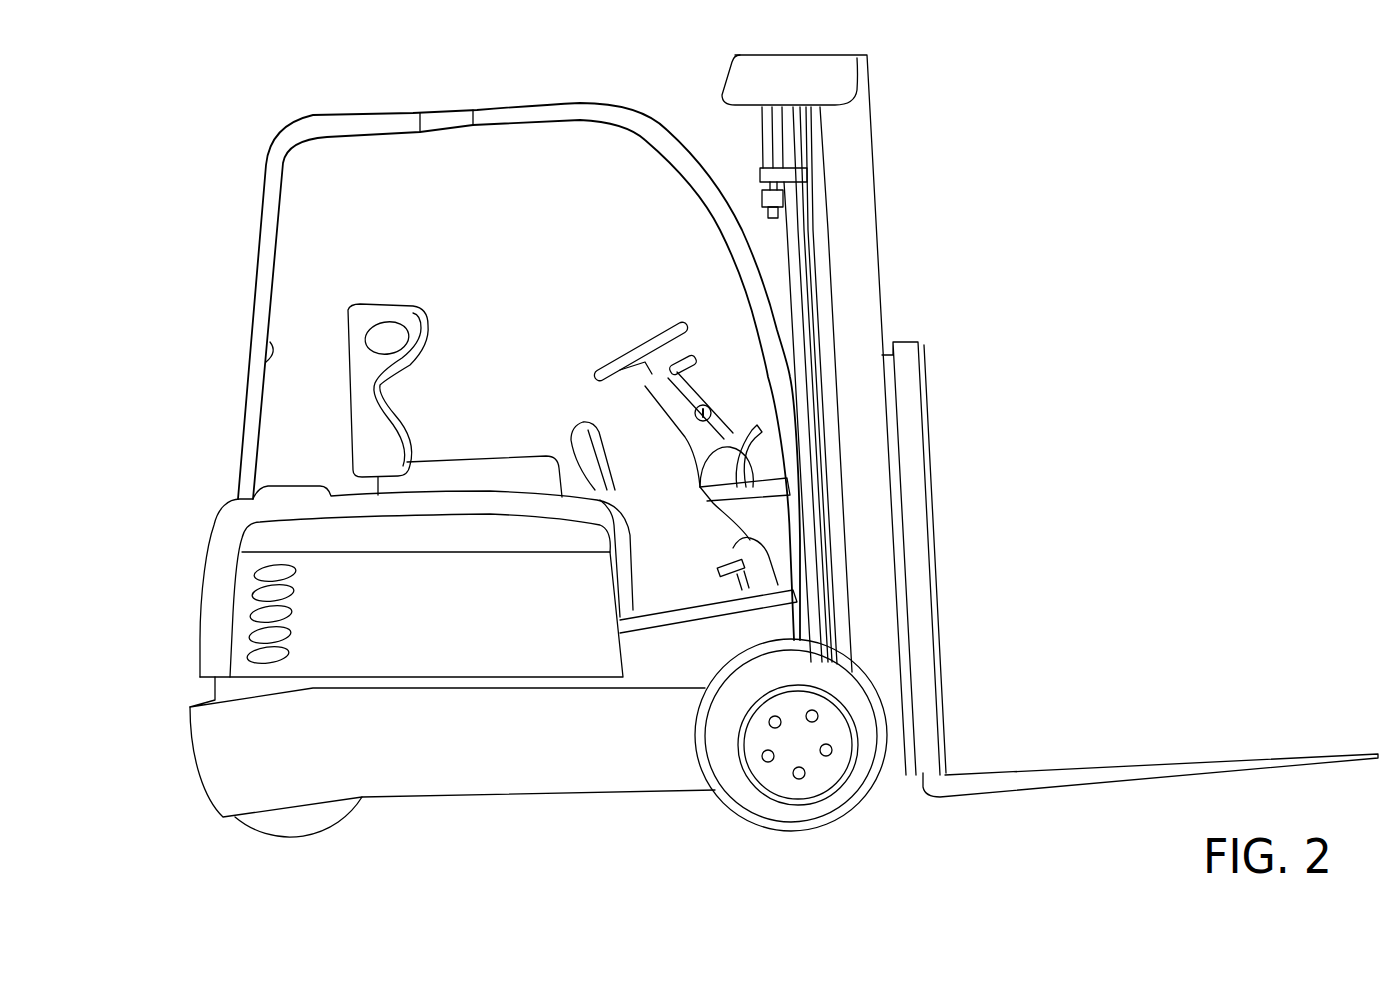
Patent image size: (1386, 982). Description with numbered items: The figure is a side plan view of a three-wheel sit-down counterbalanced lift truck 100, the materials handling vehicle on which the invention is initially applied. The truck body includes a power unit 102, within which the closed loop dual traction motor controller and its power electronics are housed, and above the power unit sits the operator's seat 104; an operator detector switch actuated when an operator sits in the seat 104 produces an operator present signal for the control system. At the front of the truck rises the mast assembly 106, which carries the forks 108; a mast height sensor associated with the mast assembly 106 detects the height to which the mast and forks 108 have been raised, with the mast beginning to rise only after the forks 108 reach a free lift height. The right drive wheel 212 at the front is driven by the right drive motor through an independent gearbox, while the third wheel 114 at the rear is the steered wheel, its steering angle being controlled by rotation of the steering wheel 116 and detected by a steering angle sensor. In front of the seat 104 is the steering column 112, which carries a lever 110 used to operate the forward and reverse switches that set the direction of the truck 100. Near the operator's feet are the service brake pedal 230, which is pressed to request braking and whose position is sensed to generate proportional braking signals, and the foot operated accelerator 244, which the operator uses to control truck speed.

The sit-down counterbalanced lift truck 100 is at (247, 136).
The power unit 102 is at (438, 630).
The seat 104 is at (485, 467).
The mast assembly 106 is at (900, 160).
The forks 108 is at (1050, 770).
The lever 110 is at (703, 342).
The steering column 112 is at (672, 443).
The third wheel 114 is at (323, 815).
The steering wheel 116 is at (605, 346).
The right drive wheel 212 is at (843, 803).
The service brake pedal 230 is at (745, 538).
The accelerator 244 is at (705, 577).